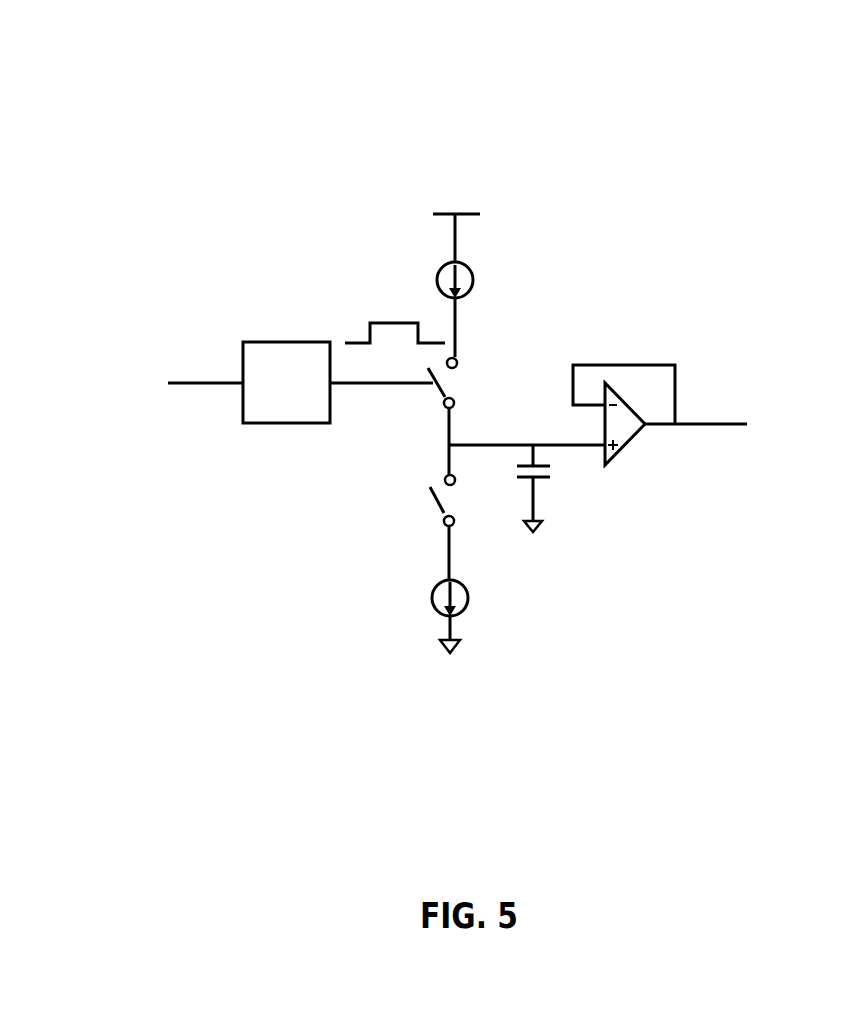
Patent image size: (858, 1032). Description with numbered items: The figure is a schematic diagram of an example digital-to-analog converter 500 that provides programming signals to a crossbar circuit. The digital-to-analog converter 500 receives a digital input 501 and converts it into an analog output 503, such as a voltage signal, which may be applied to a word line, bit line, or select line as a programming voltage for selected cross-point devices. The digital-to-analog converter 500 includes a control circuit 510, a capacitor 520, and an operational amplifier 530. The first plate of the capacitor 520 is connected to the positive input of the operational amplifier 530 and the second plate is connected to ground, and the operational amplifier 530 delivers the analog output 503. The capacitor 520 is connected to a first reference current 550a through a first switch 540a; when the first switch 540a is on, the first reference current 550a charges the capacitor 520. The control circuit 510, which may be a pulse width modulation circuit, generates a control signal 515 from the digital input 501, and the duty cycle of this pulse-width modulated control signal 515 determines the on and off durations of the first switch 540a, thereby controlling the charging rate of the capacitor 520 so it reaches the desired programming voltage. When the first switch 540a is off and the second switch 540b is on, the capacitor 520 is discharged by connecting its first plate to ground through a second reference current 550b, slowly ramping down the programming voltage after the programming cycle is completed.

The digital-to-analog converter 500 is at (462, 41).
The digital input 501 is at (180, 382).
The analog output 503 is at (717, 429).
The control circuit 510 is at (306, 397).
The control signal 515 is at (387, 353).
The capacitor 520 is at (552, 481).
The operational amplifier 530 is at (632, 443).
The first switch 540a is at (454, 391).
The second switch 540b is at (427, 504).
The first reference current 550a is at (472, 266).
The second reference current 550b is at (471, 599).